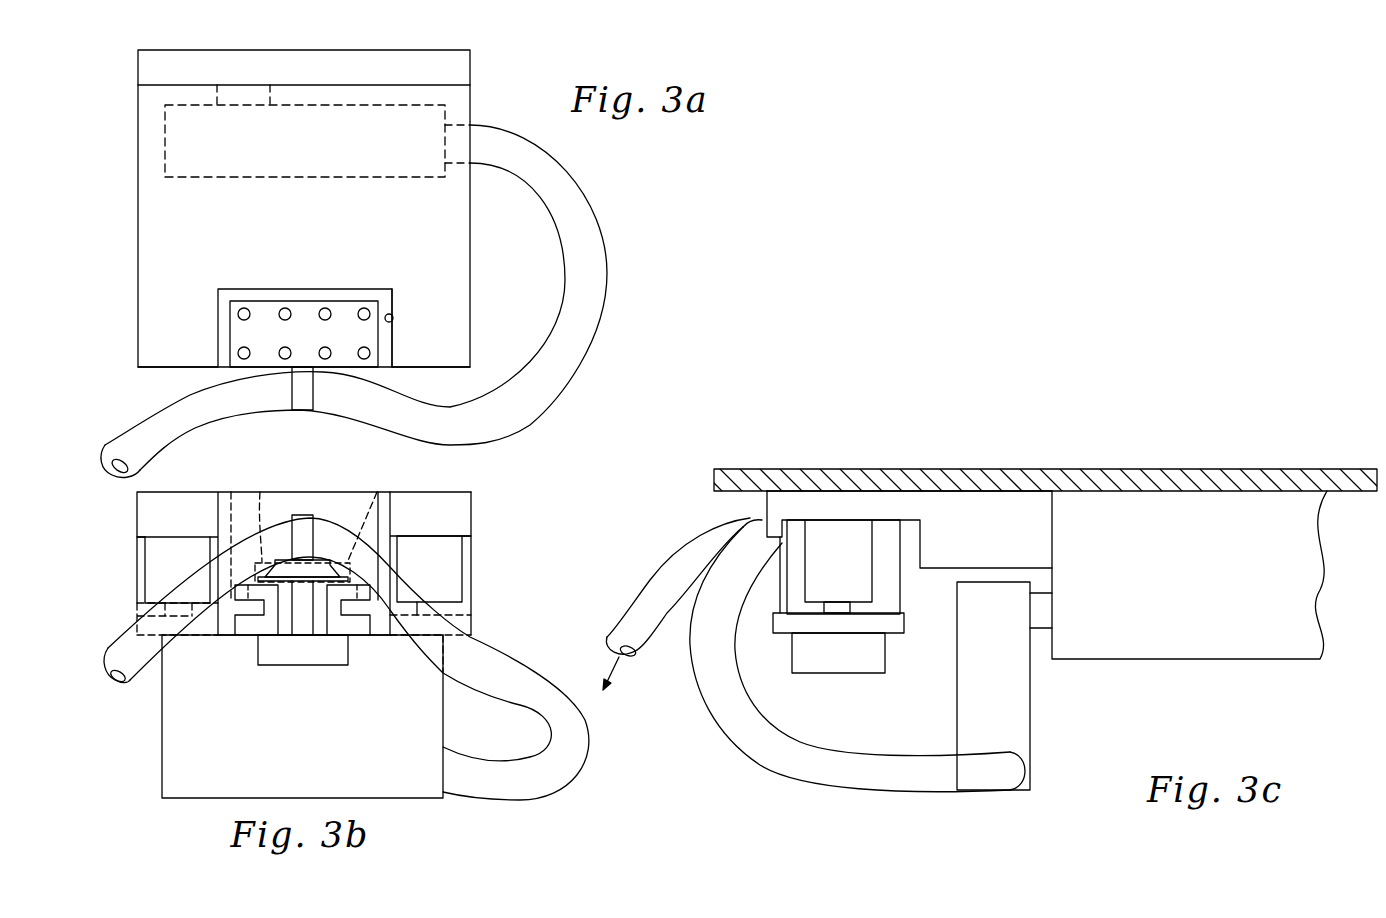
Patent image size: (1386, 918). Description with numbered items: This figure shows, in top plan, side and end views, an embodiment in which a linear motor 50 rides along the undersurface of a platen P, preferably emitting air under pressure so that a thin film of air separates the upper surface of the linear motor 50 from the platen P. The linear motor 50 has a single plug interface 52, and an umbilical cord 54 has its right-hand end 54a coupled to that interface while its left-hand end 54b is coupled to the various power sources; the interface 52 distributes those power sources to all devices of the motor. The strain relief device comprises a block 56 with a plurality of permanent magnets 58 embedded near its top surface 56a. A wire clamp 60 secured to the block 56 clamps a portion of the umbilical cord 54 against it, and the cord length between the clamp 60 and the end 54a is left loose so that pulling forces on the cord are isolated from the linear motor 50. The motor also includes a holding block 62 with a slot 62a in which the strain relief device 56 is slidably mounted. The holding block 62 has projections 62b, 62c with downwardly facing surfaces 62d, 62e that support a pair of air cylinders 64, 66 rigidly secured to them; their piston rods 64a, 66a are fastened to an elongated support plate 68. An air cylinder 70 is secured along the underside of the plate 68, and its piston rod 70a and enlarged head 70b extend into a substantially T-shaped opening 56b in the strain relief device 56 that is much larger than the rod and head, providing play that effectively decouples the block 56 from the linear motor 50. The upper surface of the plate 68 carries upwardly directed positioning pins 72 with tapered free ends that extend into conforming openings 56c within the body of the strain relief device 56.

In FIG. 3A, the linear motor 50 is at (455, 68).
In FIG. 3C, the linear motor 50 is at (1167, 584).
In FIG. 3A, the single plug interface 52 is at (163, 122).
In FIG. 3A, the umbilical cord 54 is at (598, 232).
In FIG. 3B, the umbilical cord 54 is at (540, 750).
In FIG. 3C, the umbilical cord 54 is at (772, 775).
In FIG. 3A, the right-hand end 54a is at (470, 125).
In FIG. 3C, the right-hand end 54a is at (1030, 770).
In FIG. 3C, the left-hand end 54b is at (641, 580).
In FIG. 3A, the block 56 is at (368, 368).
In FIG. 3B, the block 56 is at (342, 480).
In FIG. 3C, the block 56 is at (967, 664).
In FIG. 3B, the top surface 56a is at (235, 491).
In FIG. 3B, the T-shaped opening 56b is at (261, 492).
In FIG. 3B, the openings 56c is at (232, 598).
In FIG. 3A, the permanent magnets 58 is at (360, 349).
In FIG. 3A, the wire clamp 60 is at (302, 412).
In FIG. 3B, the wire clamp 60 is at (305, 513).
In FIG. 3C, the wire clamp 60 is at (752, 520).
In FIG. 3C, the holding block 62 is at (970, 543).
In FIG. 3A, the slot 62a is at (393, 318).
In FIG. 3A, the projection 62b is at (160, 360).
In FIG. 3B, the projection 62b is at (182, 492).
In FIG. 3A, the projection 62c is at (435, 357).
In FIG. 3B, the projection 62c is at (437, 498).
In FIG. 3C, the projection 62c is at (838, 500).
In FIG. 3B, the downwardly facing surface 62d is at (140, 538).
In FIG. 3B, the downwardly facing surface 62e is at (470, 538).
In FIG. 3B, the air cylinder 64 is at (148, 562).
In FIG. 3B, the piston rod 64a is at (138, 611).
In FIG. 3B, the air cylinder 66 is at (460, 562).
In FIG. 3C, the air cylinder 66 is at (855, 568).
In FIG. 3B, the piston rod 66a is at (458, 611).
In FIG. 3B, the elongated support plate 68 is at (247, 605).
In FIG. 3B, the air cylinder 70 is at (326, 665).
In FIG. 3C, the air cylinder 70 is at (845, 674).
In FIG. 3B, the piston rod 70a is at (294, 608).
In FIG. 3B, the enlarged head 70b is at (377, 491).
In FIG. 3B, the positioning pins 72 is at (252, 622).
In FIG. 3C, the platen P is at (1016, 468).